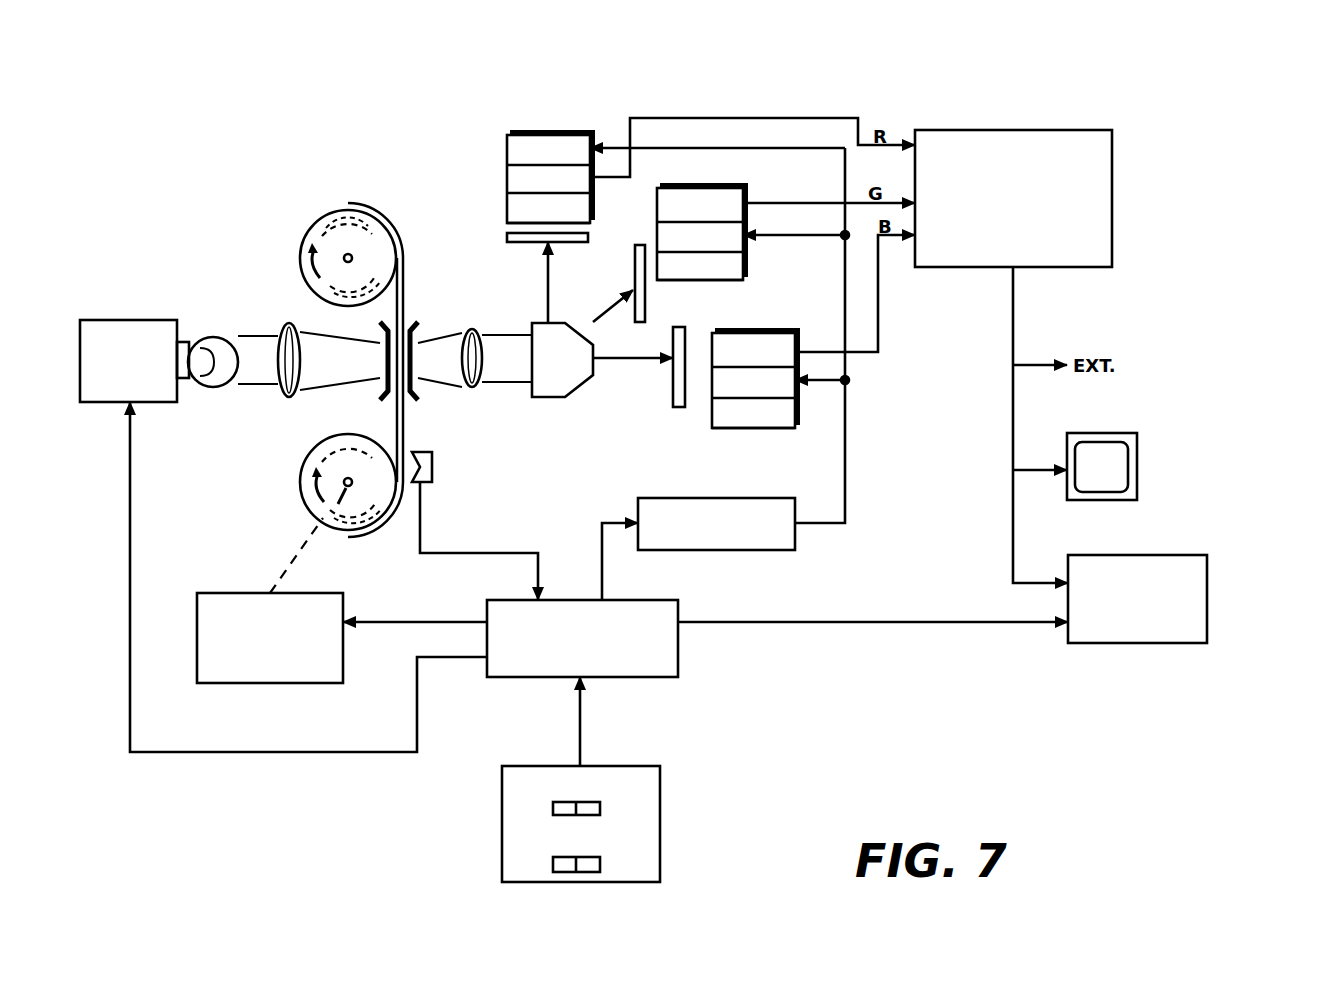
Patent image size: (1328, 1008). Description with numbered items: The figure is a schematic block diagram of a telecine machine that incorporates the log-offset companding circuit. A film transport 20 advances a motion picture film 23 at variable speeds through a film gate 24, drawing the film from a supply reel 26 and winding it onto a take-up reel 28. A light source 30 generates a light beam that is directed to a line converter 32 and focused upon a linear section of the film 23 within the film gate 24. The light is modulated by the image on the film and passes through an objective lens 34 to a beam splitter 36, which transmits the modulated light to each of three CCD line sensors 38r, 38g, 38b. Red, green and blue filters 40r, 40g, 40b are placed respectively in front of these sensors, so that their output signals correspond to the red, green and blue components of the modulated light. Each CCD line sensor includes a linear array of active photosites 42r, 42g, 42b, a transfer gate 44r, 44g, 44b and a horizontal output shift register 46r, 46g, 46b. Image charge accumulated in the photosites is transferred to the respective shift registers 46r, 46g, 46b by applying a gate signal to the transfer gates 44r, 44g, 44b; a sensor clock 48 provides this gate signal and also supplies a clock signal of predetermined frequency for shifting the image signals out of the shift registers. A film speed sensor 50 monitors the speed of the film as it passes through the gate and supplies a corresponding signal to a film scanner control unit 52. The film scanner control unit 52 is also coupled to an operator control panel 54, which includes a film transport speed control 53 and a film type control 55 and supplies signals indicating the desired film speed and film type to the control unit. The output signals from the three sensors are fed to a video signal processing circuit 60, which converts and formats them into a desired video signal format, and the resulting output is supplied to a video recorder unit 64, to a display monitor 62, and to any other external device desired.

The film transport 20 is at (234, 593).
The motion picture film 23 is at (405, 278).
The film gate 24 is at (418, 395).
The supply reel 26 is at (315, 226).
The take-up reel 28 is at (302, 496).
The light source 30 is at (131, 320).
The line converter 32 is at (282, 326).
The objective lens 34 is at (478, 390).
The beam splitter 36 is at (560, 398).
The CCD line sensor 38r is at (550, 151).
The CCD line sensor 38g is at (740, 243).
The CCD line sensor 38b is at (769, 402).
The red filter 40r is at (507, 236).
The green filter 40g is at (632, 260).
The blue filter 40b is at (678, 407).
The linear array of active photosites 42r is at (548, 212).
The transfer gate 44r is at (548, 183).
The horizontal output shift register 46r is at (548, 155).
The linear array of active photosites 42g is at (700, 269).
The transfer gate 44g is at (700, 240).
The horizontal output shift register 46g is at (700, 210).
The linear array of active photosites 42b is at (753, 416).
The transfer gate 44b is at (753, 386).
The horizontal output shift register 46b is at (753, 355).
The sensor clock 48 is at (713, 550).
The film speed sensor 50 is at (432, 462).
The film scanner control unit 52 is at (537, 678).
The film transport speed control 53 is at (516, 785).
The operator control panel 54 is at (574, 824).
The film type control 55 is at (520, 843).
The video signal processing circuit 60 is at (1112, 183).
The display monitor 62 is at (1137, 455).
The video recorder unit 64 is at (1207, 595).